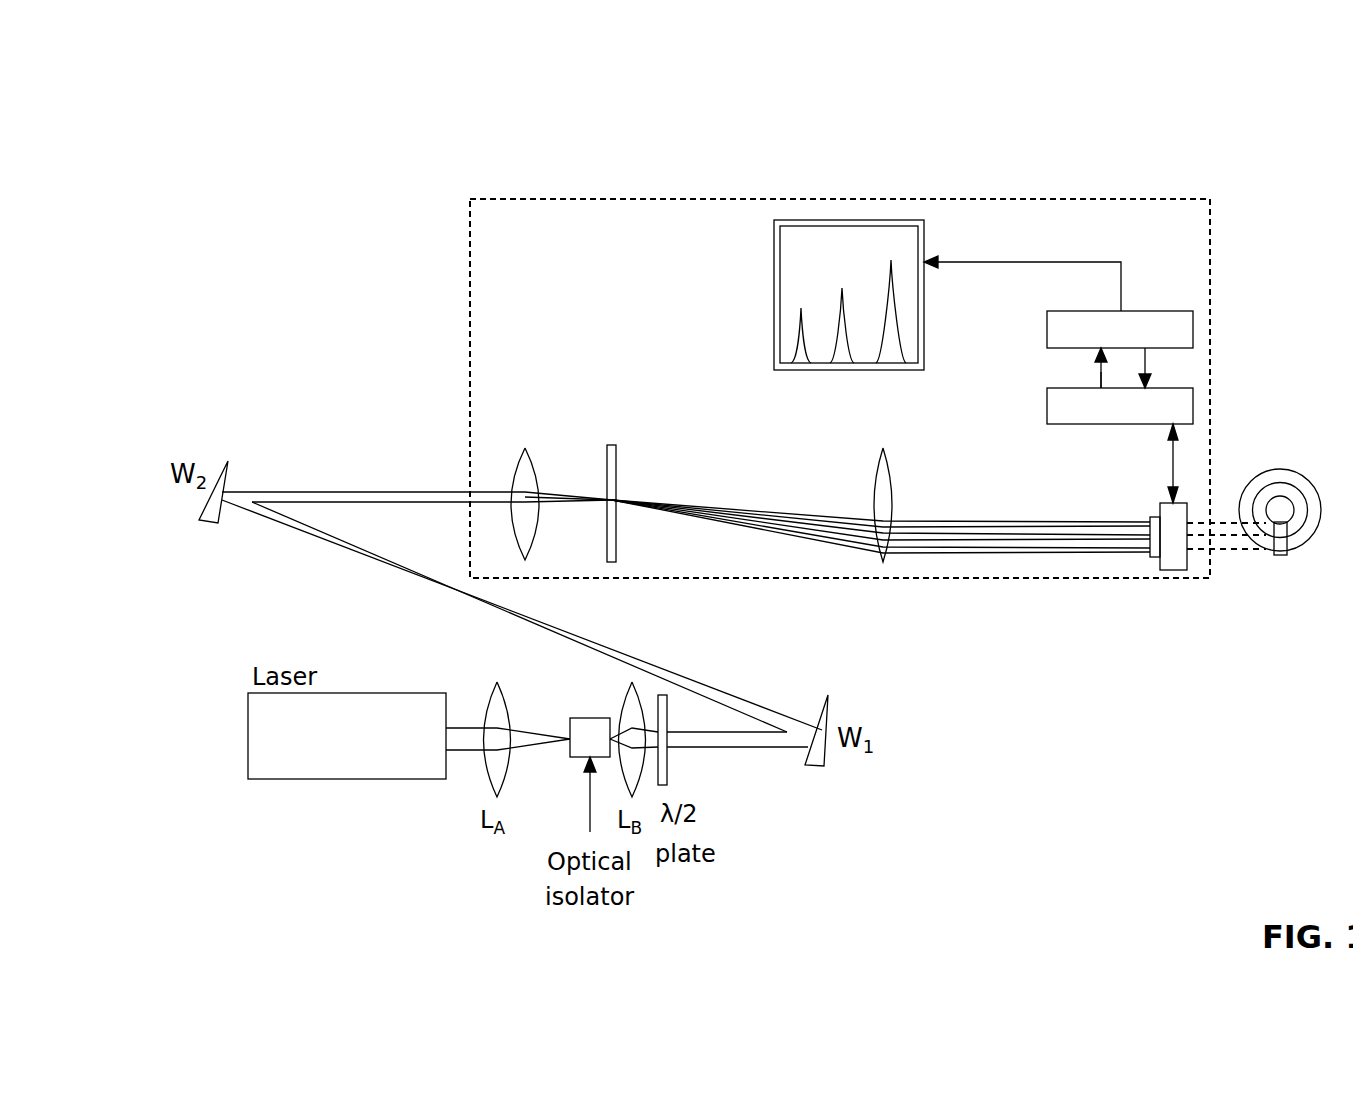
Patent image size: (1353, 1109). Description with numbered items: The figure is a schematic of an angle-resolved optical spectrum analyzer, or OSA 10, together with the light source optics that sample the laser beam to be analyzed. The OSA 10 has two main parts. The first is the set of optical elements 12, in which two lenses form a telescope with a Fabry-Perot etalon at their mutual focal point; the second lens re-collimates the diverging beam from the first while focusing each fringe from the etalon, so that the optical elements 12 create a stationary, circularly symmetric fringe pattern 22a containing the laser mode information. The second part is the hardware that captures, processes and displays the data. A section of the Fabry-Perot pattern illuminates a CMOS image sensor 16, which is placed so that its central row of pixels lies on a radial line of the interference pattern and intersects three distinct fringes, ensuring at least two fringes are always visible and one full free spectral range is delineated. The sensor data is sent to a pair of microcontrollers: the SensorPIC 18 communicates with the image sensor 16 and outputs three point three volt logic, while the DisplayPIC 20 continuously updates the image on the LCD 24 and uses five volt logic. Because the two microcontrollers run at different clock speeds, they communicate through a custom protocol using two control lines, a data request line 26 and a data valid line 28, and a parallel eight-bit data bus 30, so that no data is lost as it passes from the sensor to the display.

The angle-resolved optical spectrum analyzer 10 is at (1022, 163).
The optical elements 12 is at (908, 418).
The image sensor 16 is at (1187, 512).
The SensorPIC 18 is at (1193, 400).
The DisplayPIC 20 is at (1193, 328).
The fringe pattern 22a is at (1305, 540).
The LCD display 24 is at (877, 222).
The data request line 26 is at (1145, 362).
The data valid line 28 is at (1100, 372).
The 8-bit data bus 30 is at (1082, 372).